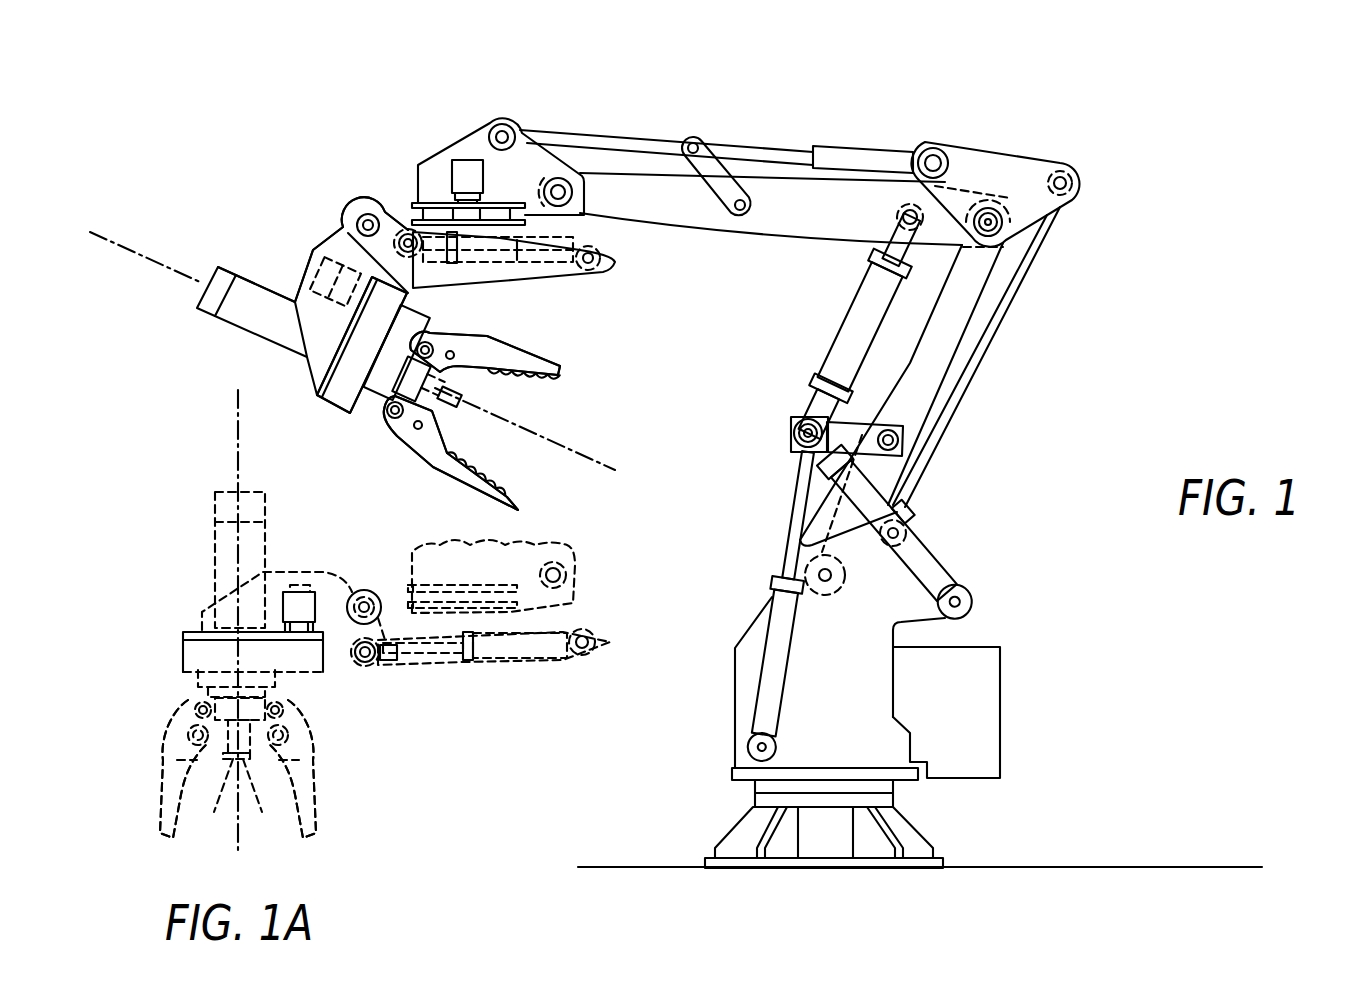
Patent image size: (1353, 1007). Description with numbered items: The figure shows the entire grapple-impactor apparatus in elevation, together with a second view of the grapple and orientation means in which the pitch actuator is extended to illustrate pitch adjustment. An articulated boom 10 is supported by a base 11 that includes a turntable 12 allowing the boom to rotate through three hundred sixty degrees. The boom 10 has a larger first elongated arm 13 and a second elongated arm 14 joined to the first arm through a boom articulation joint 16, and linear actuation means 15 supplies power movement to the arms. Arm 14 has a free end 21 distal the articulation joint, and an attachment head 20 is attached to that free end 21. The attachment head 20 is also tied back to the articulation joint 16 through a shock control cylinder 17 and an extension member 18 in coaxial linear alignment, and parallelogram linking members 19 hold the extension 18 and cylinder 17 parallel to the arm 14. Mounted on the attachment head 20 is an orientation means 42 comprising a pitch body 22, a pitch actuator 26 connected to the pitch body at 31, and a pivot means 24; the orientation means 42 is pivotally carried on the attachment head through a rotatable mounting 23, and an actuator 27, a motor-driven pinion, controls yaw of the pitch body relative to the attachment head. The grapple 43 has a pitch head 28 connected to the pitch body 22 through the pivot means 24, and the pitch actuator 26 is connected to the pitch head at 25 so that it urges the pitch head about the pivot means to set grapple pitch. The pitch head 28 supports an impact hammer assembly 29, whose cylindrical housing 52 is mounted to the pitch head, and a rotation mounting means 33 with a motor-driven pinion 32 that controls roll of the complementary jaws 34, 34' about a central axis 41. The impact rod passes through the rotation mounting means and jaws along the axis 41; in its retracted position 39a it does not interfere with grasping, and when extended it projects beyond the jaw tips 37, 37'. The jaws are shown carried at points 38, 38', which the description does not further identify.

In FIG. 1, the articulated boom 10 is at (945, 348).
In FIG. 1, the base 11 is at (733, 838).
In FIG. 1, the turntable 12 is at (755, 789).
In FIG. 1, the first elongated arm 13 is at (975, 295).
In FIG. 1, the second elongated arm 14 is at (766, 238).
In FIG. 1, the linear actuation means 15 is at (930, 572).
In FIG. 1, the boom articulation joint 16 is at (990, 160).
In FIG. 1, the shock control cylinder 17 is at (845, 150).
In FIG. 1, the extension member 18 is at (600, 140).
In FIG. 1, the parallelogram linking members 19 is at (735, 162).
In FIG. 1, the attachment head 20 is at (480, 126).
In FIG. 1, the free end 21 is at (545, 205).
In FIG. 1, the pitch body 22 is at (549, 293).
In FIG. 1A, the pitch body 22 is at (450, 675).
In FIG. 1, the rotatable mounting 23 is at (416, 213).
In FIG. 1A, the rotatable mounting 23 is at (412, 592).
In FIG. 1, the pivot means 24 is at (363, 212).
In FIG. 1A, the pivot means 24 is at (365, 590).
In FIG. 1, the pitch actuator connection to pitch head 25 is at (440, 275).
In FIG. 1A, the pitch actuator connection to pitch head 25 is at (365, 667).
In FIG. 1, the pitch actuator 26 is at (516, 272).
In FIG. 1A, the pitch actuator 26 is at (510, 655).
In FIG. 1, the actuator 27 is at (452, 172).
In FIG. 1, the pitch head 28 is at (332, 237).
In FIG. 1A, the pitch head 28 is at (337, 675).
In FIG. 1, the impact hammer assembly 29 is at (218, 270).
In FIG. 1A, the impact hammer assembly 29 is at (210, 531).
In FIG. 1, the pitch actuator connection to pitch body 31 is at (590, 270).
In FIG. 1A, the pitch actuator connection to pitch body 31 is at (585, 660).
In FIG. 1, the motor driven pinion 32 is at (325, 262).
In FIG. 1A, the motor driven pinion 32 is at (303, 590).
In FIG. 1, the rotation mounting means 33 is at (345, 383).
In FIG. 1A, the rotation mounting means 33 is at (178, 652).
In FIG. 1, the jaw 34 is at (507, 380).
In FIG. 1A, the jaw 34 is at (318, 769).
In FIG. 1, the jaw 34' is at (480, 453).
In FIG. 1A, the jaw 34' is at (147, 769).
In FIG. 1, the jaw tip 37 is at (552, 376).
In FIG. 1, the jaw tip 37' is at (504, 490).
In FIG. 1, the pivot 38 is at (432, 326).
In FIG. 1, the pivot 38' is at (375, 436).
In FIG. 1, the retracted position of impact rod 39a is at (456, 400).
In FIG. 1A, the retracted position of impact rod 39a is at (240, 760).
In FIG. 1, the central axis 41 is at (127, 252).
In FIG. 1A, the central axis 41 is at (236, 415).
In FIG. 1, the orientation means 42 is at (368, 160).
In FIG. 1, the grapple 43 is at (418, 471).
In FIG. 1A, the grapple 43 is at (152, 757).
In FIG. 1, the cylindrical housing 52 is at (255, 333).